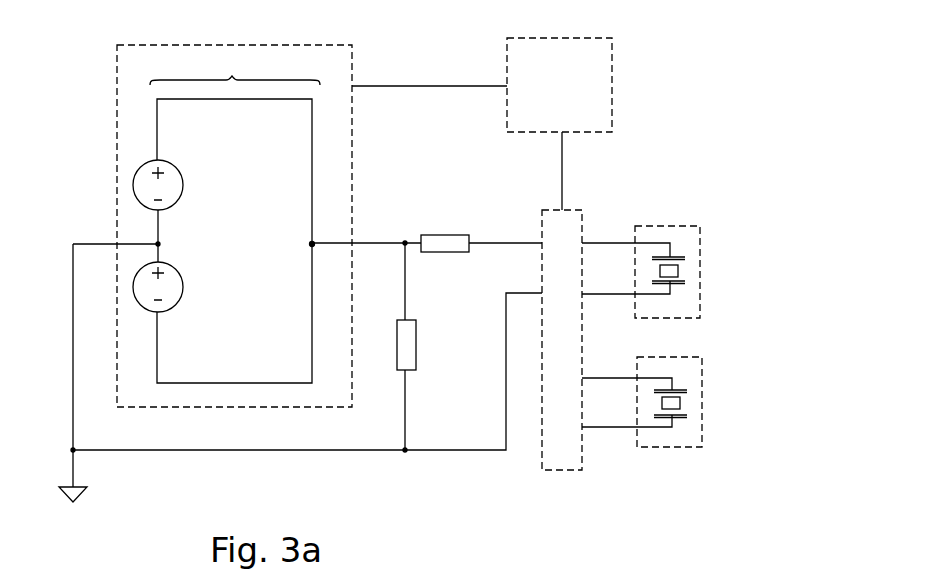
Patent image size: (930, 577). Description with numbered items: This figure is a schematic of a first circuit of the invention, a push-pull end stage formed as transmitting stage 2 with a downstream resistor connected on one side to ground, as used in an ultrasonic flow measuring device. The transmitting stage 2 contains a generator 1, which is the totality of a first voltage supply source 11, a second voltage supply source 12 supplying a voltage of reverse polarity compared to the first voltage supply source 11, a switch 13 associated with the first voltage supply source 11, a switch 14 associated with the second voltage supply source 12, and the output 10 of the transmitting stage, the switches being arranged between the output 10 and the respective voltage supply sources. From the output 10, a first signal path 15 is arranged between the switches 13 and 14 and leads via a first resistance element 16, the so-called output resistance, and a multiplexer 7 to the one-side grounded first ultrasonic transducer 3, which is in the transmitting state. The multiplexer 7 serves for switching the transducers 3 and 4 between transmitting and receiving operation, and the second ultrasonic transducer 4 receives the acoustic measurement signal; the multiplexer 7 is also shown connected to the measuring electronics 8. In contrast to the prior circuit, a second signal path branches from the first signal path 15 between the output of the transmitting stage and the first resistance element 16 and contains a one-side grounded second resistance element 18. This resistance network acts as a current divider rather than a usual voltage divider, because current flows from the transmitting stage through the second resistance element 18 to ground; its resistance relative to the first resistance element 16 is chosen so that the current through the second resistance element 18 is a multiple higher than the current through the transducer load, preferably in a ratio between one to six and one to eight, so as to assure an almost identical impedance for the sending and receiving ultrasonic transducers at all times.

The generator 1 is at (232, 76).
The transmitting stage 2 is at (117, 88).
The first ultrasonic transducer 3 is at (636, 237).
The second ultrasonic transducer 4 is at (638, 366).
The multiplexer 7 is at (548, 214).
The measuring electronics 8 is at (620, 73).
The output of the transmitting stage 10 is at (312, 243).
The first voltage supply source 11 is at (183, 186).
The second voltage supply source 12 is at (183, 290).
The switch 13 is at (312, 333).
The switch 14 is at (312, 124).
The first signal path 15 is at (388, 243).
The first resistance element 16 is at (452, 235).
The second resistance element 18 is at (416, 348).